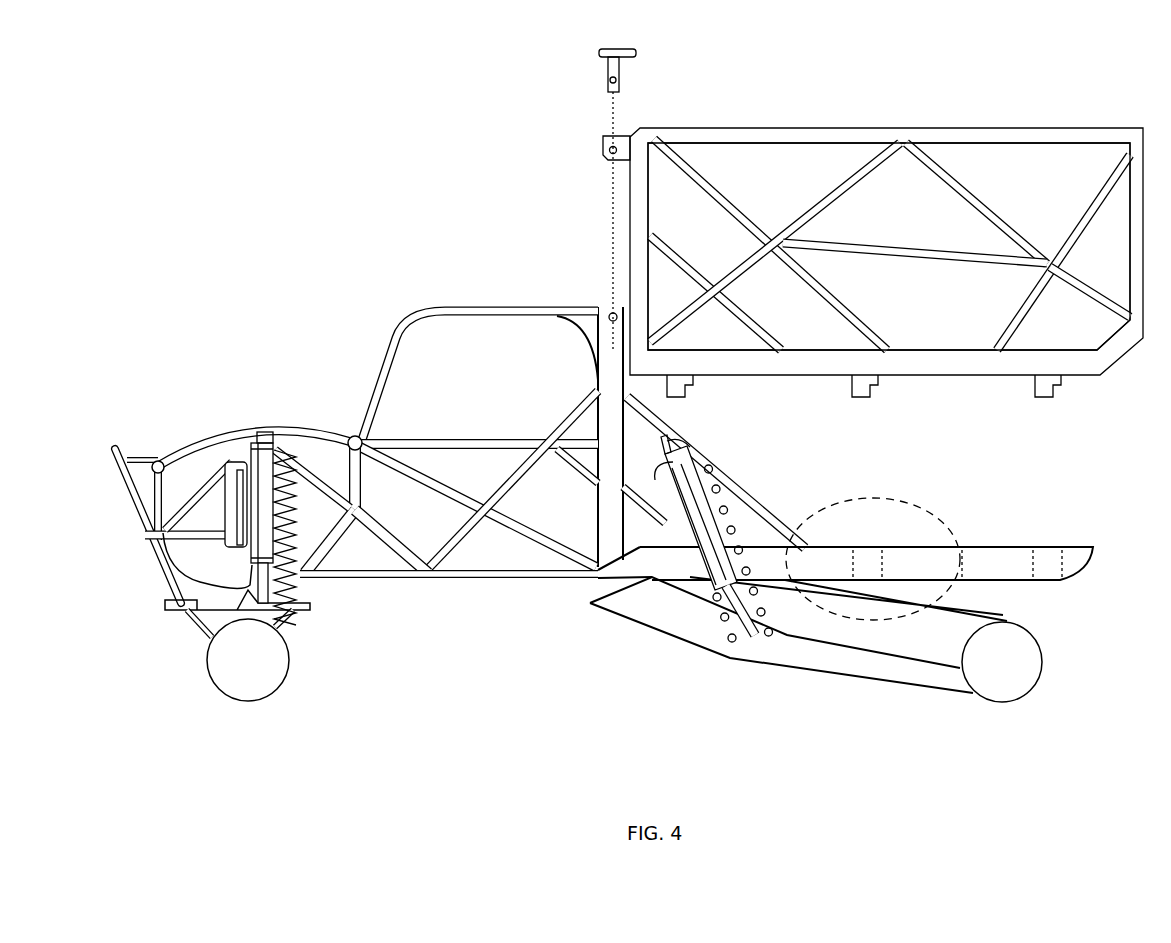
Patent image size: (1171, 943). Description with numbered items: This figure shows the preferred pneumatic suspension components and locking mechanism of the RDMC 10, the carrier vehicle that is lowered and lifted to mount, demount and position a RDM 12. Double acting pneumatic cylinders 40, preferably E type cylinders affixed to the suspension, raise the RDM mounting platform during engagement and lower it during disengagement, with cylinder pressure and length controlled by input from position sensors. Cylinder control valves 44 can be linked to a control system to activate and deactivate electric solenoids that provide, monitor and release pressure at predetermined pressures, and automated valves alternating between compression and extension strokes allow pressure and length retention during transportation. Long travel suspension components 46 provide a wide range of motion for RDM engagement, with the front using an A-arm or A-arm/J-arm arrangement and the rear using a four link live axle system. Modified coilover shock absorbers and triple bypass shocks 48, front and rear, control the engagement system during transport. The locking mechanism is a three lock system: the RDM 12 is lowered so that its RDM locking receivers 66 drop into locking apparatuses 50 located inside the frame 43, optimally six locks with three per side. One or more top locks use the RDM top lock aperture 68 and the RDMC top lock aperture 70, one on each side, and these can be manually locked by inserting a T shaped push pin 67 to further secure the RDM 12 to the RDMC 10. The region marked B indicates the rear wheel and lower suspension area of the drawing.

The RDMC 10 is at (403, 262).
The RDM 12 is at (1023, 125).
The double acting pneumatic cylinders 40 is at (292, 440).
The frame 43 is at (958, 548).
The cylinder control valves 44 is at (262, 432).
The long travel suspension components 46 is at (307, 612).
The coilover shock absorbers and triple bypass shocks 48 is at (288, 565).
The locking apparatuses 50 is at (867, 548).
The RDM locking receivers 66 is at (697, 390).
The T shaped push pin 67 is at (622, 72).
The RDM top lock aperture 68 is at (607, 150).
The RDMC top lock aperture 70 is at (607, 308).
The pivot region B is at (855, 625).